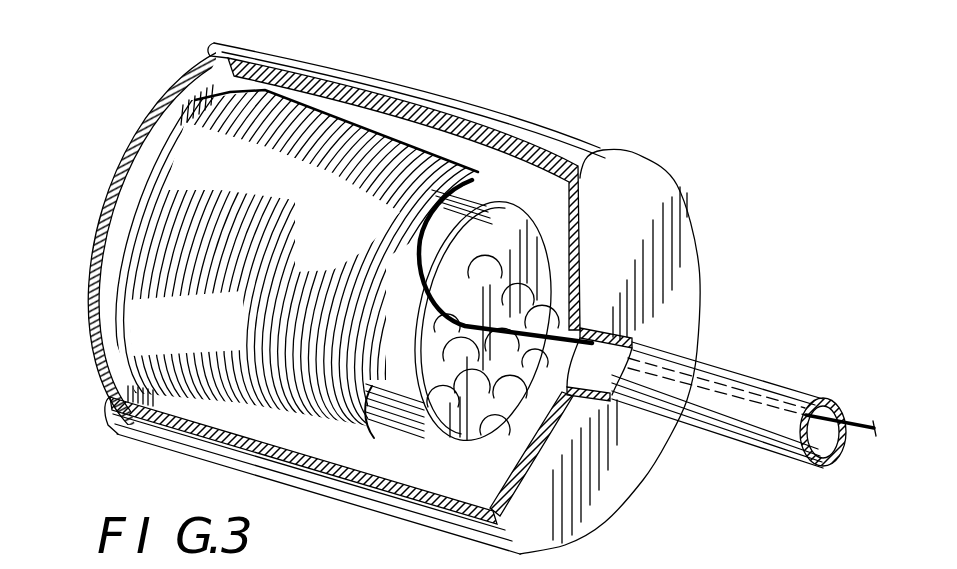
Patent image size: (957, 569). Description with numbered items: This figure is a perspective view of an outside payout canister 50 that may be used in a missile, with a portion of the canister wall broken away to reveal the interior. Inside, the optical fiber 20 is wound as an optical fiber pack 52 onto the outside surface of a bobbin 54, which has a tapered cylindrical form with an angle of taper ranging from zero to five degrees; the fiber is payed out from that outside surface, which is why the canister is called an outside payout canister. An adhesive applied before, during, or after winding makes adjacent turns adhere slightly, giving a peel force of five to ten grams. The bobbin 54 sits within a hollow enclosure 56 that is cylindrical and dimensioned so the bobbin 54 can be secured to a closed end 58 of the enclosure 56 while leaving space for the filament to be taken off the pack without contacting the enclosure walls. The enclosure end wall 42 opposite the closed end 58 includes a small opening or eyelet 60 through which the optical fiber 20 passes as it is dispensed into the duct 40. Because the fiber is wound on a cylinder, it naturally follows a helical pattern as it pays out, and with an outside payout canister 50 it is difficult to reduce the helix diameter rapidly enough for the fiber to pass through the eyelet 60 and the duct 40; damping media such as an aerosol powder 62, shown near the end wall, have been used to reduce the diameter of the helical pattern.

The optical fiber 20 is at (857, 417).
The duct 40 is at (755, 440).
The enclosure end wall 42 is at (604, 504).
The canister 50 is at (453, 90).
The optical fiber pack 52 is at (135, 257).
The bobbin 54 is at (388, 383).
The hollow enclosure 56 is at (551, 134).
The closed end 58 is at (157, 107).
The eyelet 60 is at (601, 328).
The aerosol powder 62 is at (490, 440).